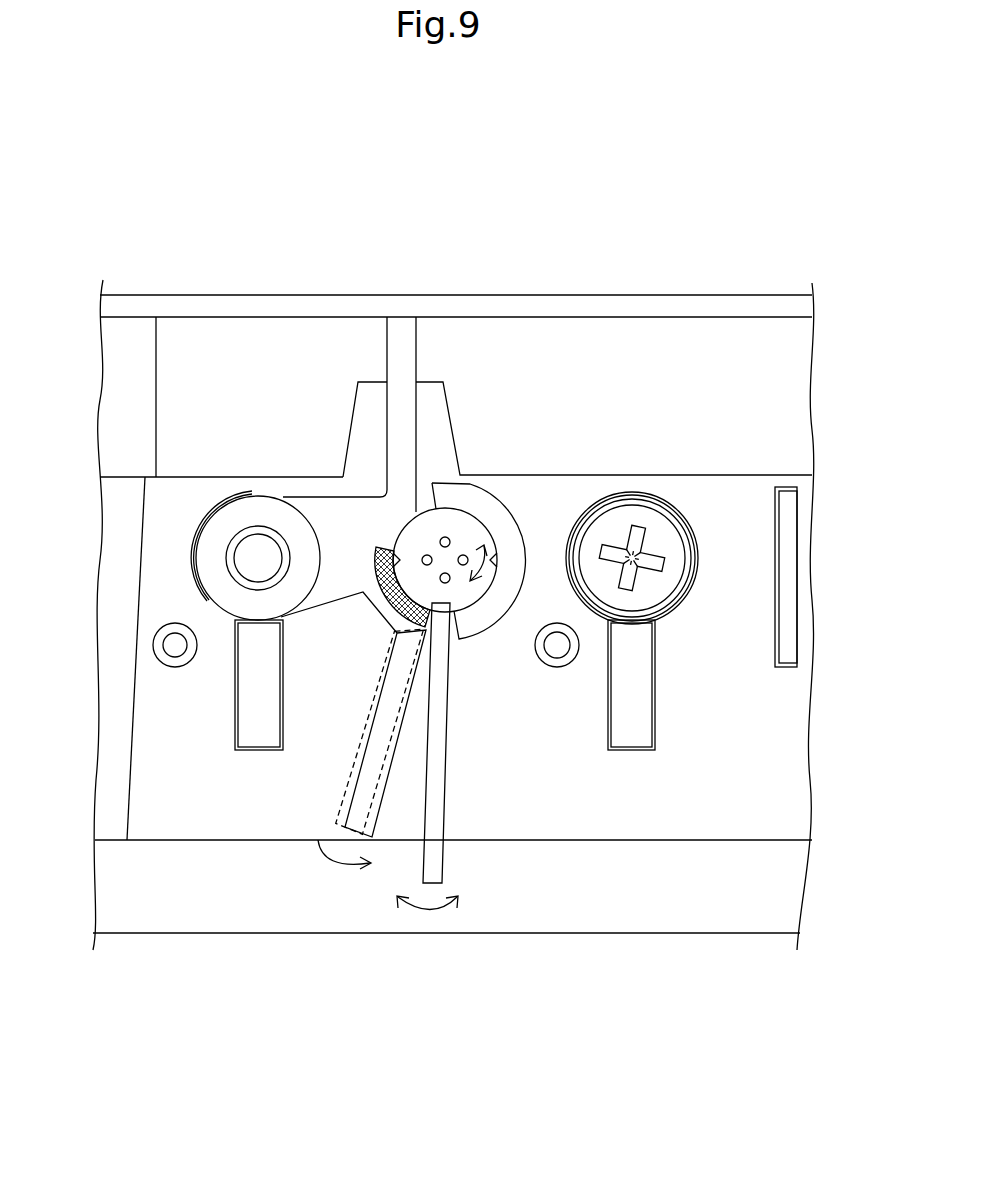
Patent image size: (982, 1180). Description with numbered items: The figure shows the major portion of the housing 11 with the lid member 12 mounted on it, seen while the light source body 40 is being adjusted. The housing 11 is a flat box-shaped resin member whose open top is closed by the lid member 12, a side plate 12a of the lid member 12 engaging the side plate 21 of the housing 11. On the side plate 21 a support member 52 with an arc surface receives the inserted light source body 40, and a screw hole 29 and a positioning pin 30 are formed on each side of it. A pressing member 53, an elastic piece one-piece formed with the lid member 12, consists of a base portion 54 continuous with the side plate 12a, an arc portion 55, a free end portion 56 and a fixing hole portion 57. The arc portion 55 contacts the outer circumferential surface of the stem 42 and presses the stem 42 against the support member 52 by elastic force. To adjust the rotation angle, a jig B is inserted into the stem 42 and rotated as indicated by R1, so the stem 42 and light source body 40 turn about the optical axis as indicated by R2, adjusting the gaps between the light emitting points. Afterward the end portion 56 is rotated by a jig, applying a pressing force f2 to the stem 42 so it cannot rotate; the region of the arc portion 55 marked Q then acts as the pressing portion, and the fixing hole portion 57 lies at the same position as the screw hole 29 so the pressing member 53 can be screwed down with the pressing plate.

The housing 11 is at (747, 936).
The lid member 12 is at (152, 294).
The side plate of the lid member 12a is at (183, 352).
The side plate of the housing 21 is at (155, 515).
The screw hole 29 is at (671, 503).
The positioning pin 30 is at (176, 667).
The light source body 40 is at (451, 408).
The stem 42 is at (468, 538).
The support member 52 is at (497, 493).
The pressing member 53 is at (376, 458).
The base portion 54 is at (400, 405).
The arc portion 55 is at (403, 537).
The end portion 56 is at (365, 757).
The fixing hole portion 57 is at (213, 565).
The jig B is at (452, 753).
The rotation of the jig R1 is at (430, 912).
The rotational adjustment of the stem R2 is at (487, 565).
The pressing force f2 is at (349, 873).
The pressing portion region Q is at (383, 597).